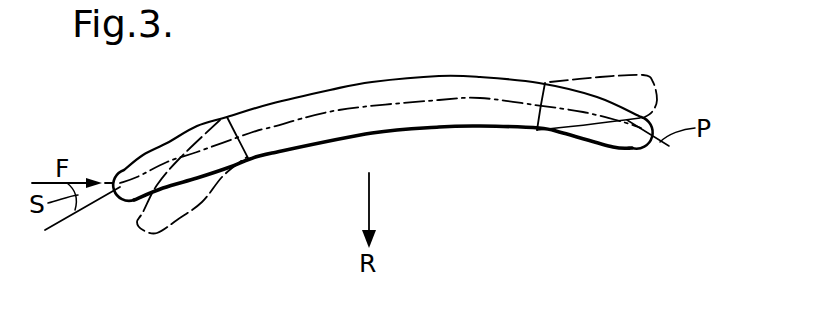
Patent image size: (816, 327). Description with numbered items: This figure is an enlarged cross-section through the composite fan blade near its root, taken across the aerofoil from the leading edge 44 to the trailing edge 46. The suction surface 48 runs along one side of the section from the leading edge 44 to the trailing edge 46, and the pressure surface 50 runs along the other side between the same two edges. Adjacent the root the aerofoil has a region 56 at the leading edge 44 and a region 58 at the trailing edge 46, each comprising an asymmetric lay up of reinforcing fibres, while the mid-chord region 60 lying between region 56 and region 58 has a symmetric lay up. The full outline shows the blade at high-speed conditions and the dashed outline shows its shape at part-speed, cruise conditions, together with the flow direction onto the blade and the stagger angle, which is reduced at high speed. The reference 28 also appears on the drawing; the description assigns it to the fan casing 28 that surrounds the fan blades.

The fan casing 28 is at (434, 77).
The leading edge 44 is at (118, 197).
The trailing edge 46 is at (650, 147).
The suction surface 48 is at (372, 77).
The pressure surface 50 is at (389, 133).
The region at the leading edge 56 is at (208, 119).
The region at the trailing edge 58 is at (629, 143).
The mid-chord region 60 is at (462, 114).